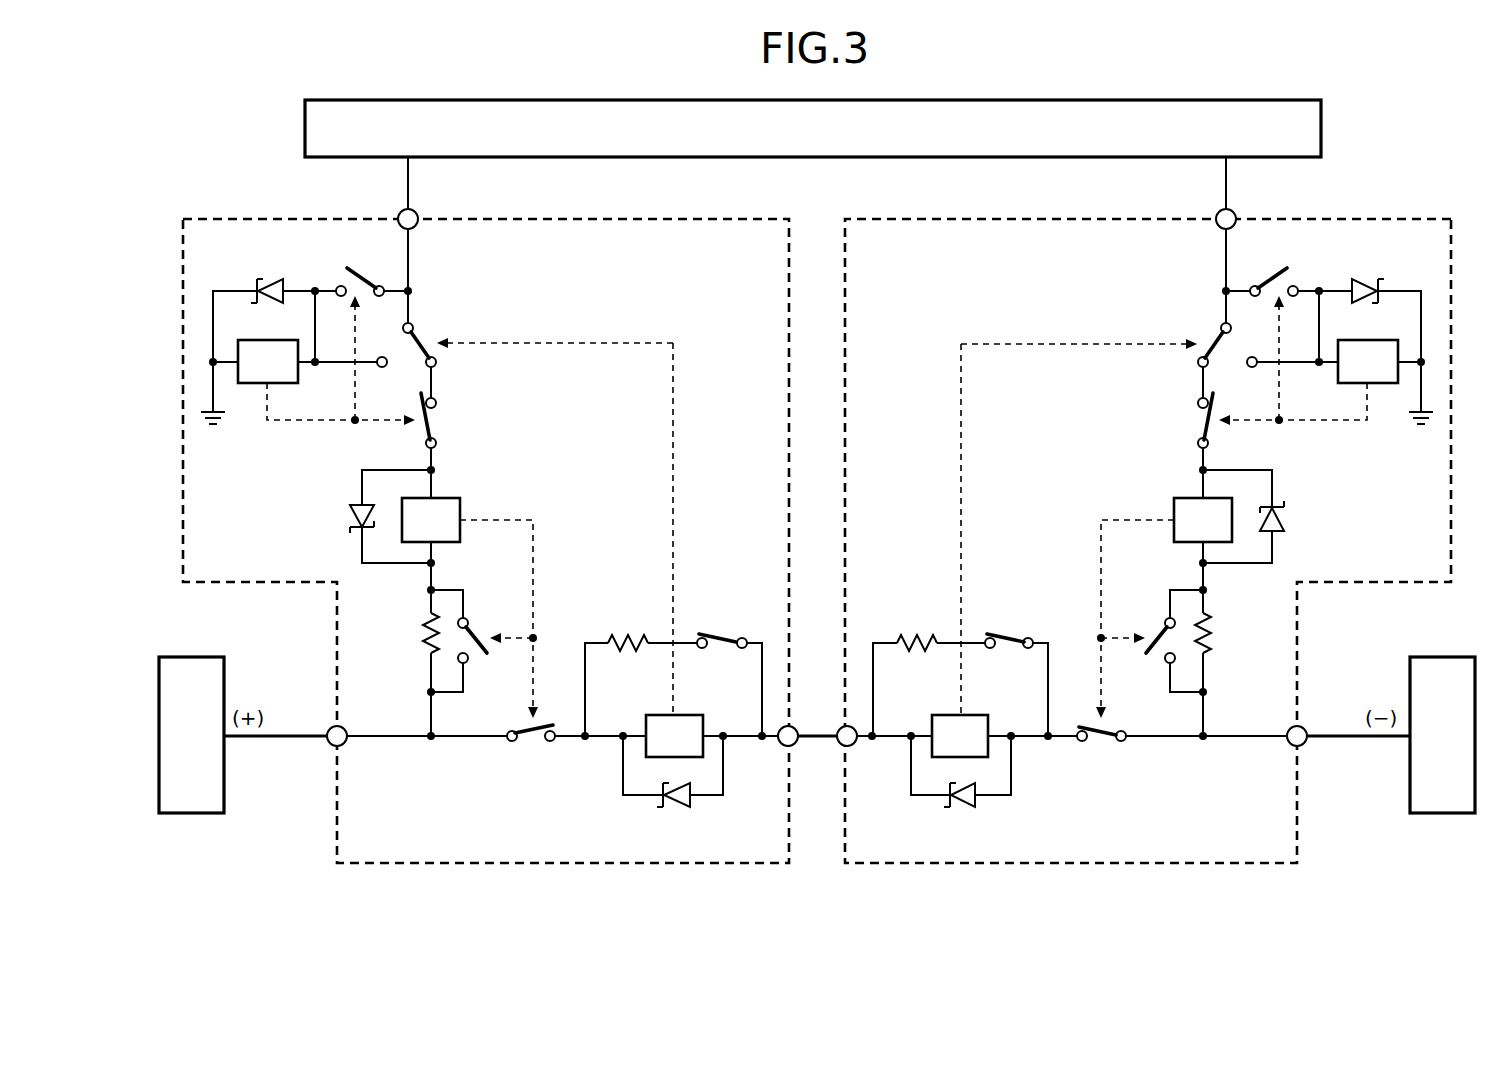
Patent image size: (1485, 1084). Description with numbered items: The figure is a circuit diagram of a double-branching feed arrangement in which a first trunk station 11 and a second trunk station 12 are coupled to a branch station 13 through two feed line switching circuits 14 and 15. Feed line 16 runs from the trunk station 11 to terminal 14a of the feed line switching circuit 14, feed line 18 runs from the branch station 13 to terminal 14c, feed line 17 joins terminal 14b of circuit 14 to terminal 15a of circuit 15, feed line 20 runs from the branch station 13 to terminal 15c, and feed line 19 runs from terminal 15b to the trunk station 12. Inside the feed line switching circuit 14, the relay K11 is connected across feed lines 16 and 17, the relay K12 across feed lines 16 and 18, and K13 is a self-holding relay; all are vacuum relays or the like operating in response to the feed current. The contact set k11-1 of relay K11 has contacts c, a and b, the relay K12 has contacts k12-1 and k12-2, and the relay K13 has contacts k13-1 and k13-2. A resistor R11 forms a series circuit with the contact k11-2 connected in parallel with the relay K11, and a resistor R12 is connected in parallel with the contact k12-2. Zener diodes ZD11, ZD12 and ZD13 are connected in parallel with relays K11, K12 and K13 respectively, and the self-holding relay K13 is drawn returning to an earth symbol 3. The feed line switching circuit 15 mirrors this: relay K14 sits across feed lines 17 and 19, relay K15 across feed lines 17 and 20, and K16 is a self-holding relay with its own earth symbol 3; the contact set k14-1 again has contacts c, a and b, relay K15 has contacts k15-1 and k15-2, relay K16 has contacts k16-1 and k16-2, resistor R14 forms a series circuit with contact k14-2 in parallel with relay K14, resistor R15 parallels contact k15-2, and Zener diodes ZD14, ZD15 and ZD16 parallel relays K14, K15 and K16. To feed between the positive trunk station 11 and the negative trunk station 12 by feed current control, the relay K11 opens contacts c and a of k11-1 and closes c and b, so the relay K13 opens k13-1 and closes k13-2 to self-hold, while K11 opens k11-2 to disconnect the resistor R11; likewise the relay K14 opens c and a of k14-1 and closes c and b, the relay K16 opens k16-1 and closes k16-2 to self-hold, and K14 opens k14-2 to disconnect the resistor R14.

The branch station 13 is at (304, 129).
The feed line 18 is at (411, 180).
The feed line 20 is at (1223, 181).
The terminal 14c is at (417, 226).
The terminal 15c is at (1217, 226).
The feed line switching circuit 14 is at (335, 839).
The feed line switching circuit 15 is at (1299, 840).
The trunk station 11 is at (190, 656).
The trunk station 12 is at (1444, 656).
The feed line 16 is at (294, 734).
The feed line 19 is at (1338, 736).
The feed line 17 is at (815, 731).
The terminal 14a is at (344, 727).
The terminal 14b is at (781, 744).
The terminal 15a is at (853, 746).
The terminal 15b is at (1290, 727).
The ground 3 is at (231, 424).
The contact a is at (817, 363).
The contact b is at (816, 376).
The contact c is at (817, 330).
The relay K11 is at (673, 736).
The relay K12 is at (431, 520).
The self-holding relay K13 is at (293, 337).
The relay K14 is at (961, 736).
The relay K15 is at (1203, 520).
The self-holding relay K16 is at (1341, 337).
The contact set k11-1 is at (447, 335).
The contact k11-2 is at (729, 671).
The contact k12-1 is at (530, 749).
The contact k12-2 is at (480, 626).
The contact k13-1 is at (461, 420).
The contact k13-2 is at (363, 268).
The contact set k14-1 is at (1186, 335).
The contact k14-2 is at (1015, 671).
The contact k15-1 is at (1097, 750).
The contact k15-2 is at (1154, 626).
The contact k16-1 is at (1173, 420).
The contact k16-2 is at (1270, 268).
The resistor R11 is at (639, 671).
The resistor R12 is at (405, 633).
The resistor R14 is at (929, 669).
The resistor R15 is at (1228, 633).
The Zener diode ZD11 is at (673, 791).
The Zener diode ZD12 is at (354, 516).
The Zener diode ZD13 is at (266, 329).
The Zener diode ZD14 is at (961, 791).
The Zener diode ZD15 is at (1276, 516).
The Zener diode ZD16 is at (1368, 329).